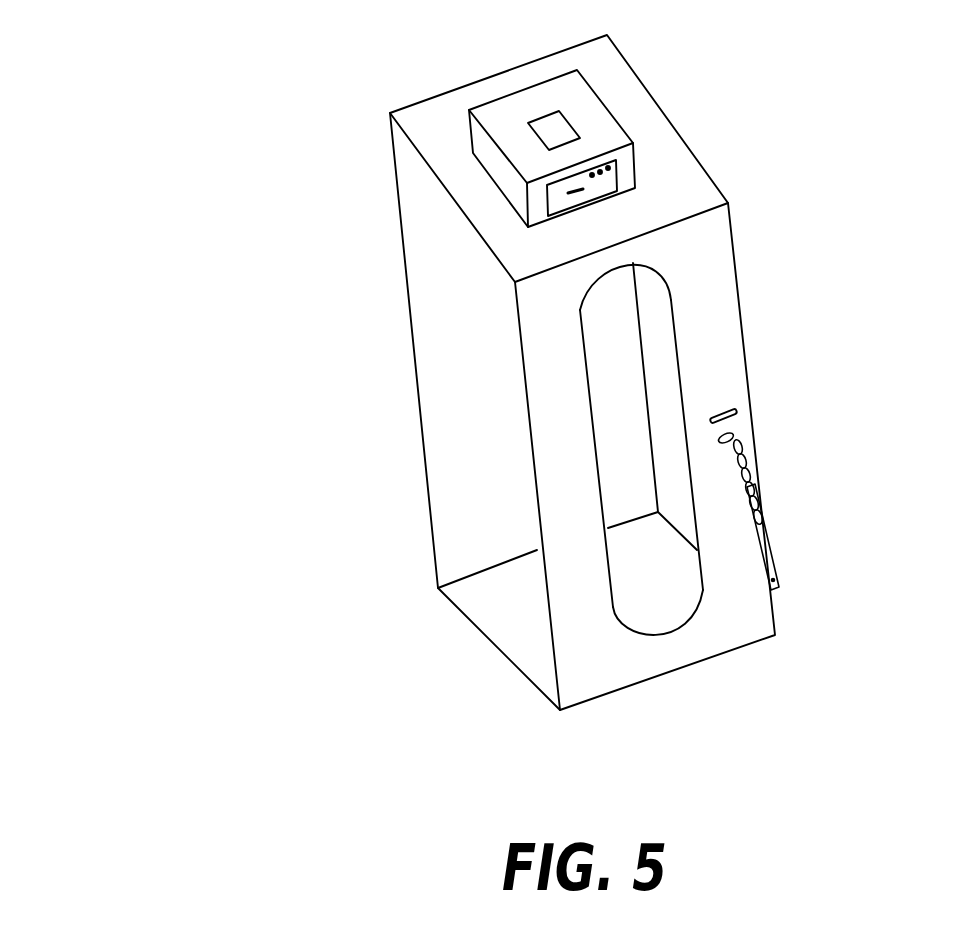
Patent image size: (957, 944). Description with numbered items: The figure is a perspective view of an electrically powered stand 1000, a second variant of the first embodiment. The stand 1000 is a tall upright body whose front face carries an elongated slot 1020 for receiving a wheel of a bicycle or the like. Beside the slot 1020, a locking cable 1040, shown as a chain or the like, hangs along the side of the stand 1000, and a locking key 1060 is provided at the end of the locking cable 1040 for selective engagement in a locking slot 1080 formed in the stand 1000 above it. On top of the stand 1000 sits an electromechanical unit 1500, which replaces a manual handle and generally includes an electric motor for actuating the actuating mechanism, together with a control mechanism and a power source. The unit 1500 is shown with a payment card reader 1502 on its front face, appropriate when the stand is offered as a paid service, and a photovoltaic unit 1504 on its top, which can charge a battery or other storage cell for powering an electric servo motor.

The stand 1000 is at (312, 374).
The slot 1020 is at (672, 312).
The locking cable 1040 is at (757, 489).
The locking key 1060 is at (777, 560).
The locking slot 1080 is at (735, 411).
The electromechanical unit 1500 is at (618, 140).
The payment card reader 1502 is at (607, 182).
The photovoltaic unit 1504 is at (543, 120).